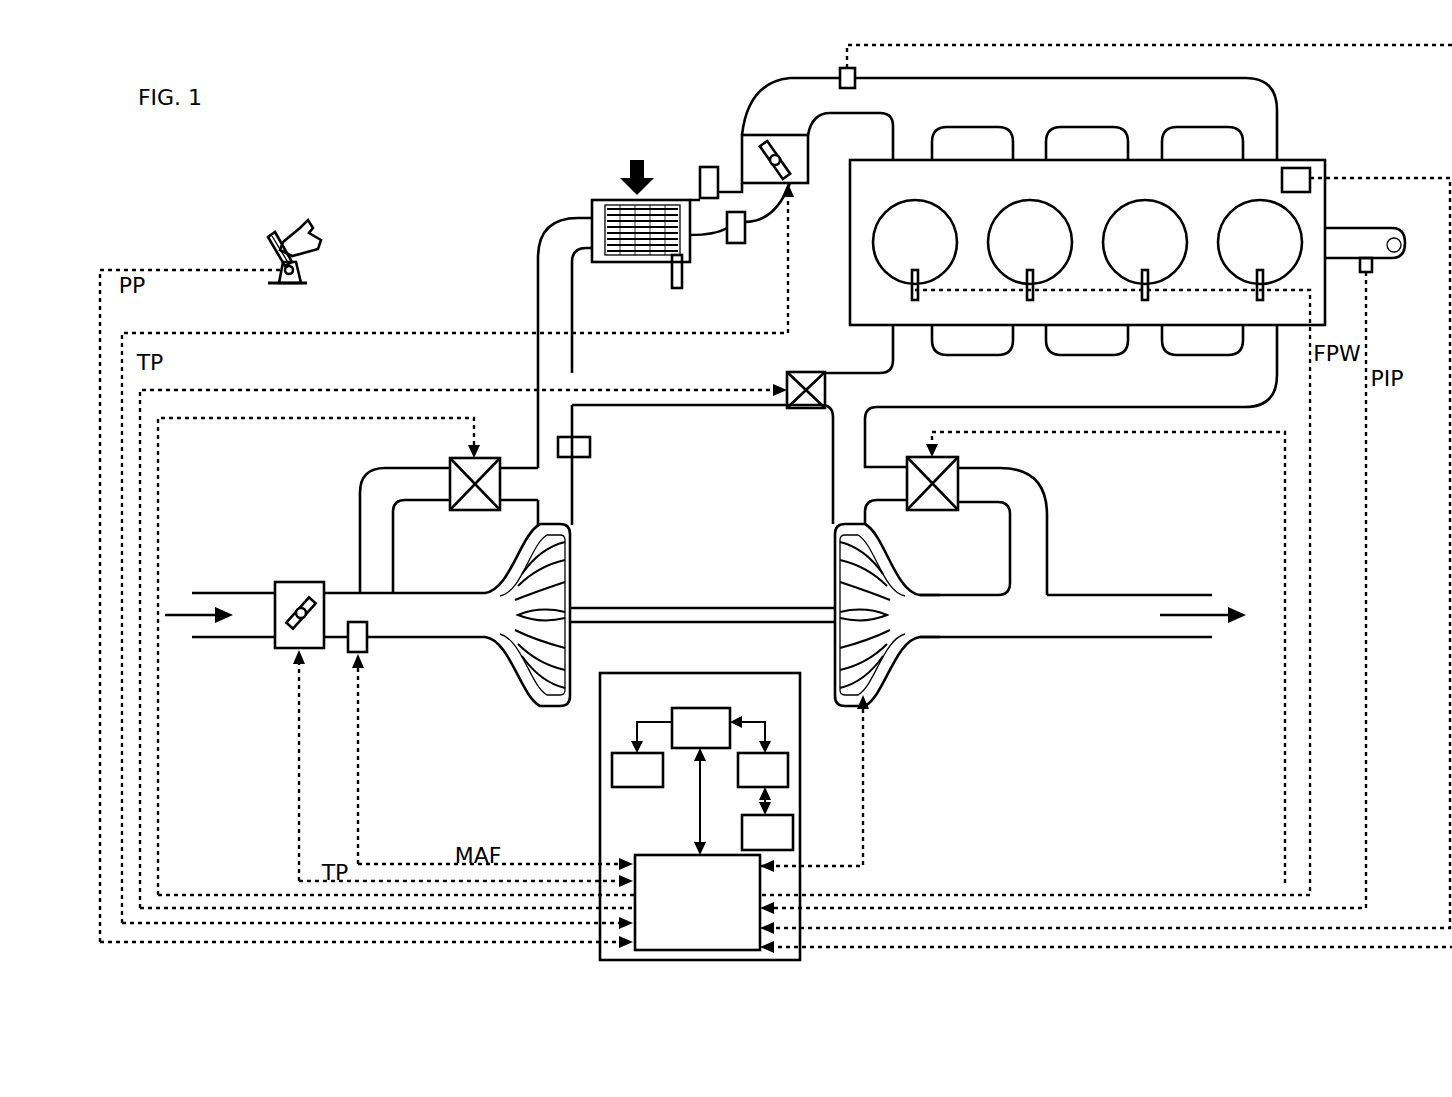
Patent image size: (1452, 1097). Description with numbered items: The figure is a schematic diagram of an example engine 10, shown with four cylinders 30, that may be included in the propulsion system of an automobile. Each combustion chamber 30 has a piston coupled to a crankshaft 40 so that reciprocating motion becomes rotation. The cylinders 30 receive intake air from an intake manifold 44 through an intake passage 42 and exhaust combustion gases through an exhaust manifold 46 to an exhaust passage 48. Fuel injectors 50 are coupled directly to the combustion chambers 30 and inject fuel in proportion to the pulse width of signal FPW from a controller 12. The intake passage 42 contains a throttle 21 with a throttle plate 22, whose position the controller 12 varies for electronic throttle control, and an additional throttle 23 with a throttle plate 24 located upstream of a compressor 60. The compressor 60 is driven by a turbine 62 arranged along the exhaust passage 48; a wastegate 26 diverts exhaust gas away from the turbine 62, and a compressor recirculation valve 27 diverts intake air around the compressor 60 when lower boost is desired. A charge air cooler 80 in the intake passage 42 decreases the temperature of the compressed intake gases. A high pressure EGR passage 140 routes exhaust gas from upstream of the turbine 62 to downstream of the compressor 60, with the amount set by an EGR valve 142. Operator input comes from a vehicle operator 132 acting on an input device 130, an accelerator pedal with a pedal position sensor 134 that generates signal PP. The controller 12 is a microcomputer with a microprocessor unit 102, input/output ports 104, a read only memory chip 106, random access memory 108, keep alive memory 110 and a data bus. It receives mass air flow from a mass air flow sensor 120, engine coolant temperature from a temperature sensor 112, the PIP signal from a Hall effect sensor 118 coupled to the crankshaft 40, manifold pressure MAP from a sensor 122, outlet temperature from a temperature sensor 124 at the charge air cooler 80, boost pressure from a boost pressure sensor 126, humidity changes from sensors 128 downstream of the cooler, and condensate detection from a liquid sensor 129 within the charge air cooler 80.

The engine 10 is at (1087, 242).
The controller 12 is at (687, 816).
The throttle 21 is at (769, 138).
The throttle plate 22 is at (790, 176).
The additional throttle 23 is at (294, 593).
The throttle plate 24 is at (305, 598).
The wastegate 26 is at (960, 476).
The compressor recirculation valve 27 is at (452, 472).
The cylinder 30 is at (1087, 242).
The crankshaft 40 is at (1372, 228).
The intake passage 42 is at (315, 615).
The intake manifold 44 is at (1009, 119).
The exhaust manifold 46 is at (1071, 424).
The exhaust passage 48 is at (1083, 616).
The fuel injector 50 is at (911, 296).
The compressor 60 is at (525, 665).
The turbine 62 is at (878, 568).
The charge air cooler 80 is at (600, 200).
The microprocessor unit 102 is at (662, 722).
The input/output ports 104 is at (697, 902).
The read only memory chip 106 is at (612, 775).
The random access memory 108 is at (790, 762).
The keep alive memory 110 is at (795, 820).
The temperature sensor 112 is at (1300, 168).
The Hall effect sensor 118 is at (1372, 272).
The mass air flow sensor 120 is at (367, 642).
The manifold pressure sensor 122 is at (838, 72).
The temperature sensor 124 is at (738, 243).
The boost pressure sensor 126 is at (590, 447).
The humidity sensor 128 is at (707, 167).
The liquid sensor 129 is at (678, 288).
The input device 130 is at (311, 242).
The vehicle operator 132 is at (322, 232).
The pedal position sensor 134 is at (305, 272).
The EGR passage 140 is at (682, 373).
The EGR valve 142 is at (800, 372).